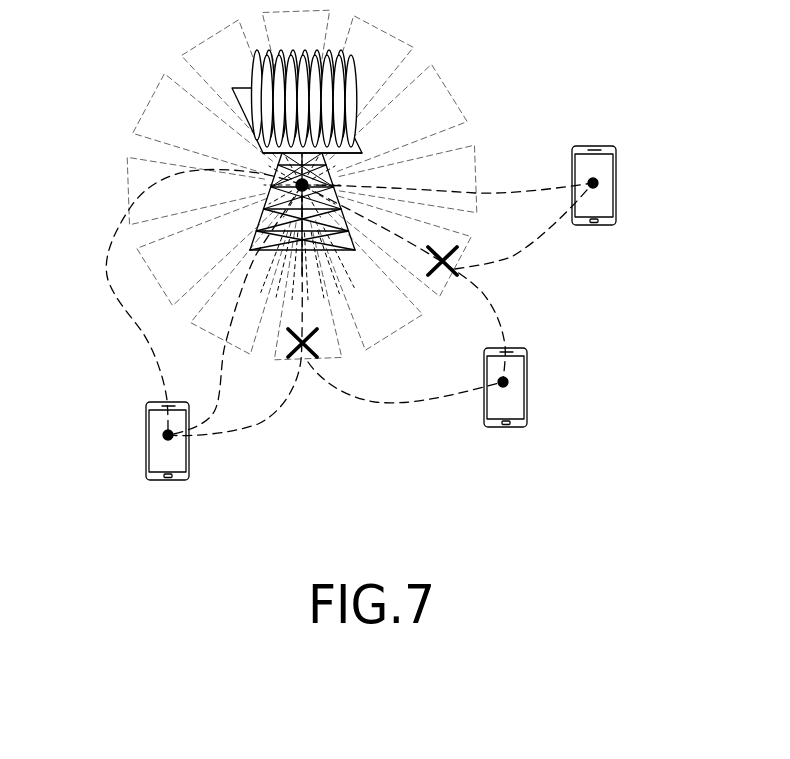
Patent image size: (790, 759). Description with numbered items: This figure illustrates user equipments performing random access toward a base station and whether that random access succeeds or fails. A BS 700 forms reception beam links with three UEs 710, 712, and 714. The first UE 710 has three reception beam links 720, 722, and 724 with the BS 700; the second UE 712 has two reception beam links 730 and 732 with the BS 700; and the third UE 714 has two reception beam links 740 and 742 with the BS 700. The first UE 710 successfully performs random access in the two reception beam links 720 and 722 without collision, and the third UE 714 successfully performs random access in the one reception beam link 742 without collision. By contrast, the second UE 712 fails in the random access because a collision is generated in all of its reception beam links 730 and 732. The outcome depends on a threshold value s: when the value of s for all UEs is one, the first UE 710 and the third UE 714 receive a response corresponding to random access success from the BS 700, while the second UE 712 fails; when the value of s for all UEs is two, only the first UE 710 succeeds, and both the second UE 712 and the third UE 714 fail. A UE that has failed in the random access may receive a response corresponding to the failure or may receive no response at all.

The BS 700 is at (300, 185).
The UE#1 710 is at (146, 437).
The UE#2 712 is at (527, 383).
The UE#3 714 is at (616, 183).
The reception beam link 720 is at (110, 275).
The reception beam link 722 is at (222, 374).
The reception beam link 724 is at (253, 425).
The reception beam link 730 is at (378, 403).
The reception beam link 732 is at (493, 312).
The reception beam link 740 is at (512, 262).
The reception beam link 742 is at (513, 192).